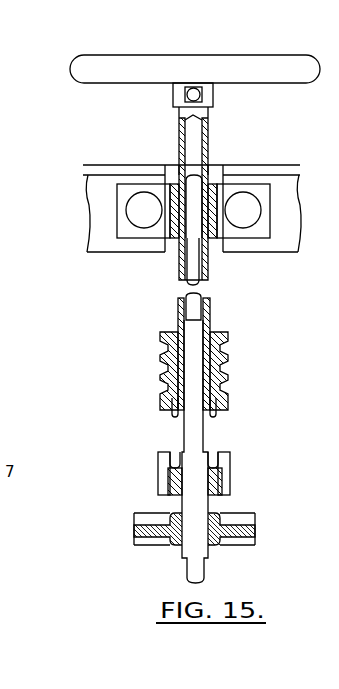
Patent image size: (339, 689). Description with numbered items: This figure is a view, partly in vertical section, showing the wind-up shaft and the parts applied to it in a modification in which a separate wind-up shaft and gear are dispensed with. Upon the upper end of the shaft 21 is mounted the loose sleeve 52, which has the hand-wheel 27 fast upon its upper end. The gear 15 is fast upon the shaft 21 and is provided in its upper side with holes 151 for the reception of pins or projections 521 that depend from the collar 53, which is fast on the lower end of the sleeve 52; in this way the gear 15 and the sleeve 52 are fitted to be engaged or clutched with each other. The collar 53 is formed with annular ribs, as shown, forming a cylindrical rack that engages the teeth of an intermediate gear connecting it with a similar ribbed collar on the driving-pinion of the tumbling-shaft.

The hand-wheel 27 is at (222, 66).
The loose sleeve 52 is at (208, 302).
The collar 53 is at (230, 366).
The pins 521 is at (171, 413).
The shaft 21 is at (194, 435).
The gear 15 is at (232, 479).
The holes 151 is at (175, 452).